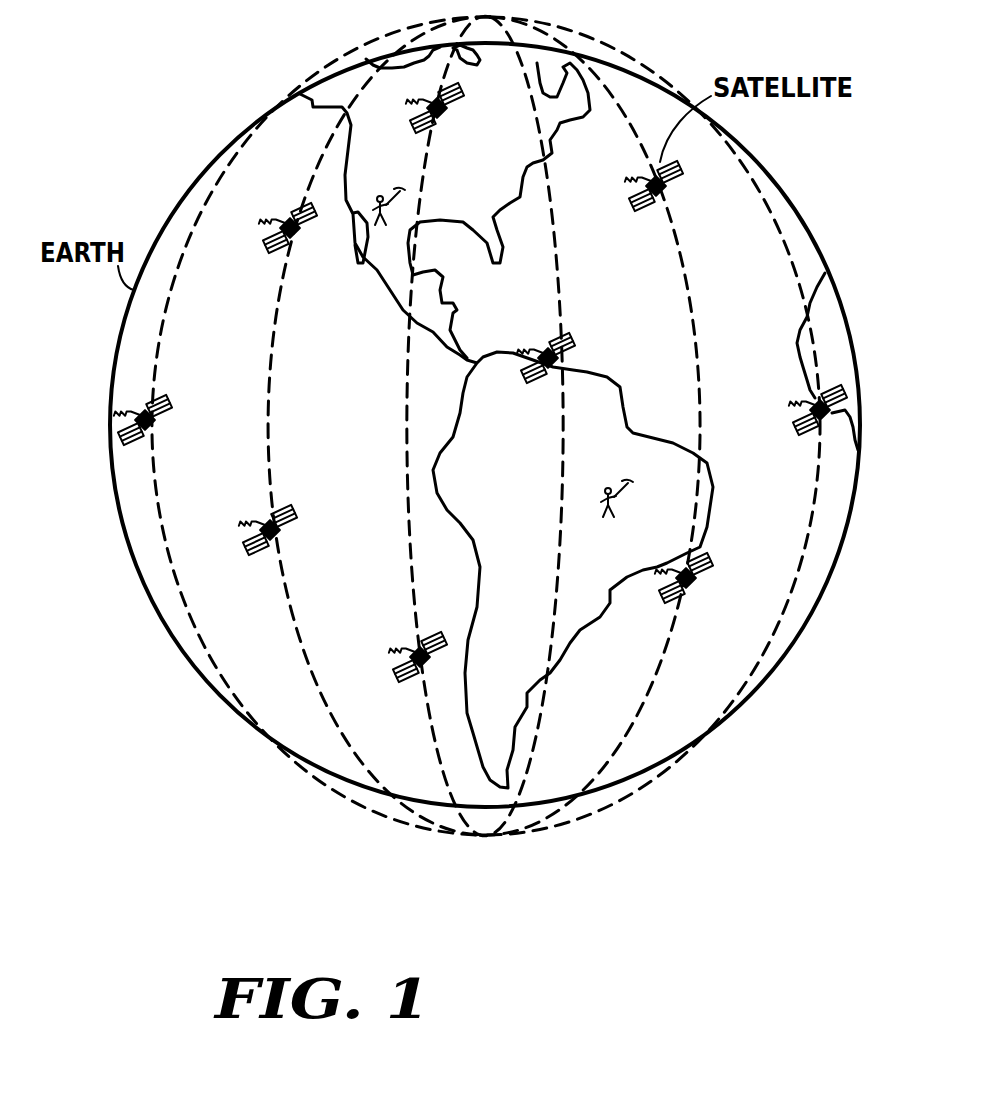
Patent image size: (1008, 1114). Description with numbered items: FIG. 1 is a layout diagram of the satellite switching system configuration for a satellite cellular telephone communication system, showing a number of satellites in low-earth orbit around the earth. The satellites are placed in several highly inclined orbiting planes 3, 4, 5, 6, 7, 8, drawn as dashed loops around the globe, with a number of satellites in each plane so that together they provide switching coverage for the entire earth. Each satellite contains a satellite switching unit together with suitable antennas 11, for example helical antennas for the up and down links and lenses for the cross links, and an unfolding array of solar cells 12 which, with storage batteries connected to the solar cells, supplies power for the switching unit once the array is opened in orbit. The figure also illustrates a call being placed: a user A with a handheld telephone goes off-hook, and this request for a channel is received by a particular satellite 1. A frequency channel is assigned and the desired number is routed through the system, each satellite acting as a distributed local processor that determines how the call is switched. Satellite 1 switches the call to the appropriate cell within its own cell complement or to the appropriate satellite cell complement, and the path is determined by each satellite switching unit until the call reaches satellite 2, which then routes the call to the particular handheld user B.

The satellite 1 is at (703, 552).
The satellite 2 is at (272, 230).
The orbiting plane 3 is at (180, 607).
The orbiting plane 4 is at (320, 678).
The orbiting plane 5 is at (437, 740).
The orbiting plane 6 is at (533, 738).
The orbiting plane 7 is at (655, 680).
The orbiting plane 8 is at (797, 610).
The antennas 11 is at (268, 512).
The array of solar cells 12 is at (283, 546).
The user A is at (605, 488).
The handheld user B is at (378, 196).